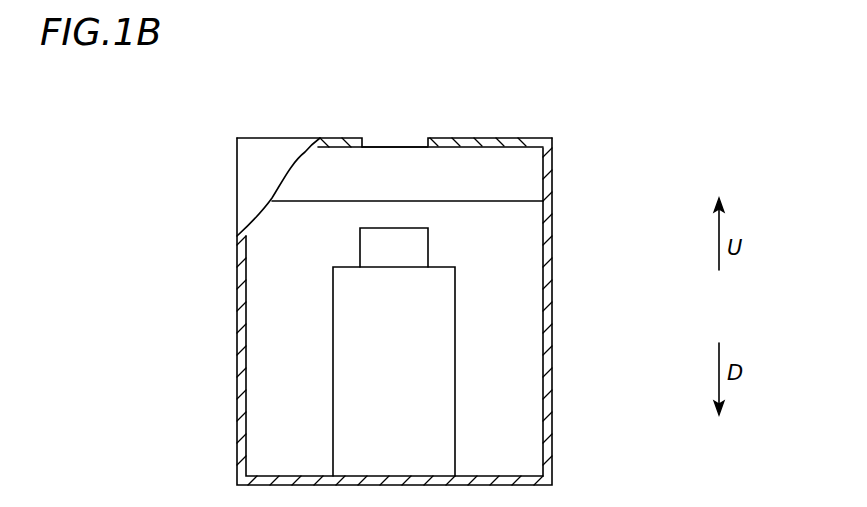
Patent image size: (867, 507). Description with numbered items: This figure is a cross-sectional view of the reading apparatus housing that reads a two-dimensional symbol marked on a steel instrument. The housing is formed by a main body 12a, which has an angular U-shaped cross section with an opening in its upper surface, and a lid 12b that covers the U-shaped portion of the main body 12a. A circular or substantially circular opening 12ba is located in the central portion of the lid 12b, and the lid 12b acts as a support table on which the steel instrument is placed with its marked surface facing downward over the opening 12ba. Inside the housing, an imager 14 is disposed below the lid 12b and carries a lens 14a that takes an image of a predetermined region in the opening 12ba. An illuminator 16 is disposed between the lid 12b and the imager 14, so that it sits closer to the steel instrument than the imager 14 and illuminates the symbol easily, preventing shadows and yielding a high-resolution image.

The main body 12a is at (242, 323).
The lid 12b is at (525, 136).
The opening 12ba is at (363, 139).
The imager 14 is at (445, 340).
The lens 14a is at (420, 244).
The illuminator 16 is at (530, 170).